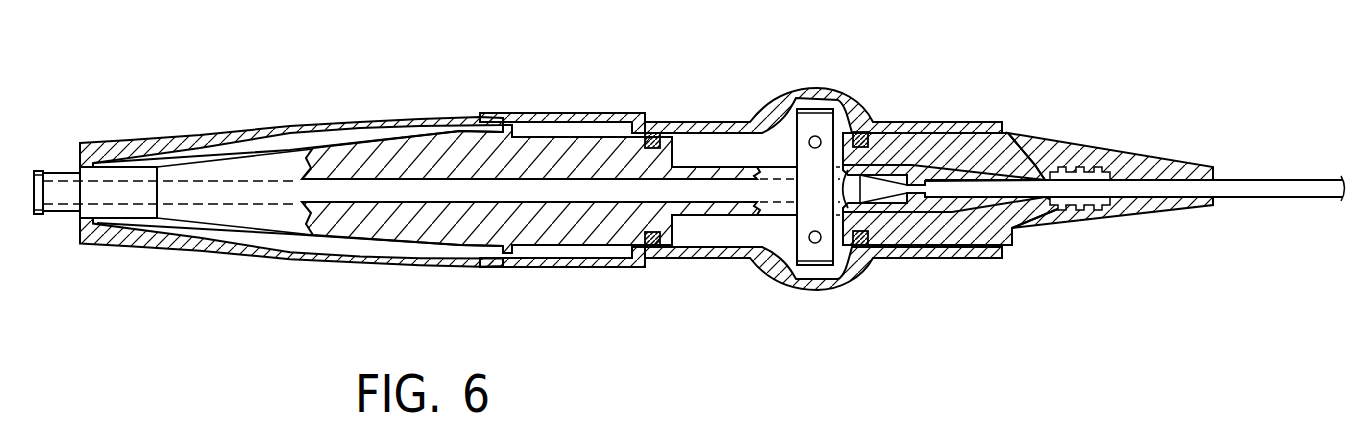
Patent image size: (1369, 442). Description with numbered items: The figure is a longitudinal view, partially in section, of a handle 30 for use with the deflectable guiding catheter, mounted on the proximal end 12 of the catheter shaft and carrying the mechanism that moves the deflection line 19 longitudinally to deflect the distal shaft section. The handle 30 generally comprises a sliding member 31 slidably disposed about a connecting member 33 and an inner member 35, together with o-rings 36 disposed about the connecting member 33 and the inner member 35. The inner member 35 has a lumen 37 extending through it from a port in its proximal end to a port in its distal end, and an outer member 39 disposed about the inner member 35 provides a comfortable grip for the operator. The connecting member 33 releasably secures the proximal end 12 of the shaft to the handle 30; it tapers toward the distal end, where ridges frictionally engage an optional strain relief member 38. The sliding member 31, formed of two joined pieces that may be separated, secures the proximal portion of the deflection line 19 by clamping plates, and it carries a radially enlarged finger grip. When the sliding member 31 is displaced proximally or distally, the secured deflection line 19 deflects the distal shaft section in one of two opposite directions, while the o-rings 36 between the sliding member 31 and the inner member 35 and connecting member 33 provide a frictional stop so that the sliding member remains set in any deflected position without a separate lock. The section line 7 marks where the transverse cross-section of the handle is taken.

The proximal end of the shaft 12 is at (1254, 198).
The deflection line 19 is at (977, 214).
The handle 30 is at (325, 285).
The sliding member 31 is at (850, 283).
The connecting member 33 is at (1028, 211).
The inner member 35 is at (550, 124).
The o-rings 36 is at (657, 134).
The lumen 37 is at (477, 199).
The strain relief member 38 is at (1073, 148).
The outer member 39 is at (270, 127).
The section line 7- 7 is at (652, 90).